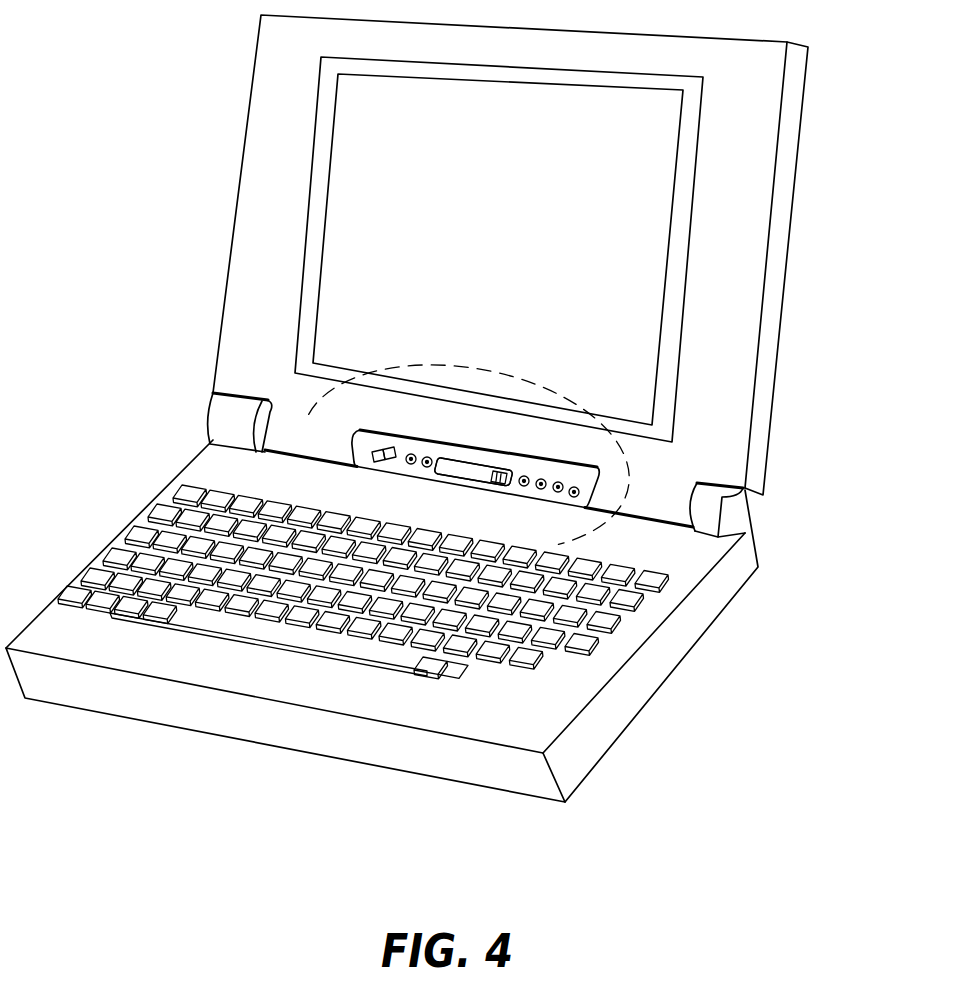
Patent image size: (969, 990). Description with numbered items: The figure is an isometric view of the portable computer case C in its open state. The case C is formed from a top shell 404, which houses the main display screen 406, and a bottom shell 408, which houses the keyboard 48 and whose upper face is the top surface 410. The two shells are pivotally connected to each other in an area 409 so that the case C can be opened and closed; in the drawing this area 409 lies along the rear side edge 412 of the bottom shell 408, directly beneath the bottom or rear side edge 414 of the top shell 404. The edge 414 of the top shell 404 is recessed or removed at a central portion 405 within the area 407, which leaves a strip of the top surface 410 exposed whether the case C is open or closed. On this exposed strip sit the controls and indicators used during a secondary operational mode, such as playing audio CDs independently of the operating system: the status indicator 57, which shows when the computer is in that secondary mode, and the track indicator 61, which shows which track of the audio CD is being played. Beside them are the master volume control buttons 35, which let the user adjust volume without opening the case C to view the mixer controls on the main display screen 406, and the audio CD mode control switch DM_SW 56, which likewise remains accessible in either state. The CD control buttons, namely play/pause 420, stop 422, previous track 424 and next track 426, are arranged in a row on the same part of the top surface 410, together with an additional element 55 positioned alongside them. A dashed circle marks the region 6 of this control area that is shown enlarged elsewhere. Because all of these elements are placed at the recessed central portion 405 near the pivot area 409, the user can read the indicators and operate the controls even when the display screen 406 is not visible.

The portable computer case C is at (103, 306).
The top shell 404 is at (800, 191).
The main display screen 406 is at (518, 271).
The rear side edge 412 is at (211, 391).
The rear side edge 414 is at (445, 431).
The area 409 is at (365, 462).
The central portion 405 is at (508, 489).
The audio CD mode control switch DM_SW 56 is at (369, 461).
The area 407 is at (397, 460).
The master volume control buttons 35 is at (427, 456).
The button slot 55 is at (483, 461).
The status indicator 57 is at (459, 467).
The track indicator 61 is at (489, 489).
The play/pause button 420 is at (525, 475).
The stop button 422 is at (543, 478).
The previous track button 424 is at (559, 481).
The next track button 426 is at (571, 496).
The detail region of FIG. 6 is at (634, 465).
The bottom shell 408 is at (651, 708).
The top surface 410 is at (216, 428).
The keyboard 48 is at (137, 527).